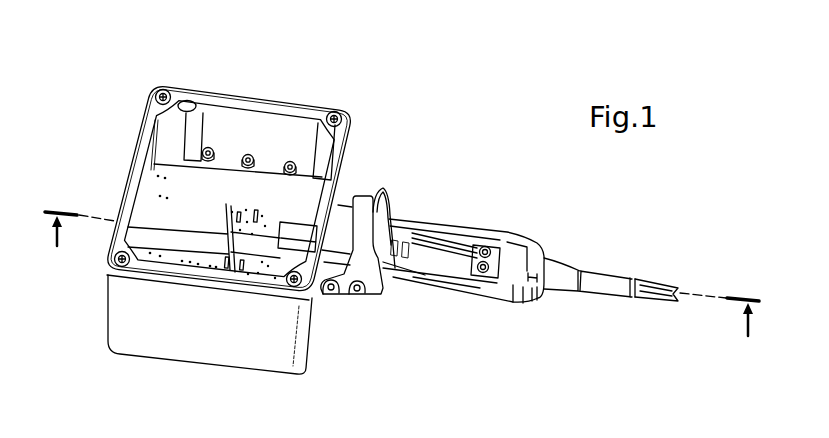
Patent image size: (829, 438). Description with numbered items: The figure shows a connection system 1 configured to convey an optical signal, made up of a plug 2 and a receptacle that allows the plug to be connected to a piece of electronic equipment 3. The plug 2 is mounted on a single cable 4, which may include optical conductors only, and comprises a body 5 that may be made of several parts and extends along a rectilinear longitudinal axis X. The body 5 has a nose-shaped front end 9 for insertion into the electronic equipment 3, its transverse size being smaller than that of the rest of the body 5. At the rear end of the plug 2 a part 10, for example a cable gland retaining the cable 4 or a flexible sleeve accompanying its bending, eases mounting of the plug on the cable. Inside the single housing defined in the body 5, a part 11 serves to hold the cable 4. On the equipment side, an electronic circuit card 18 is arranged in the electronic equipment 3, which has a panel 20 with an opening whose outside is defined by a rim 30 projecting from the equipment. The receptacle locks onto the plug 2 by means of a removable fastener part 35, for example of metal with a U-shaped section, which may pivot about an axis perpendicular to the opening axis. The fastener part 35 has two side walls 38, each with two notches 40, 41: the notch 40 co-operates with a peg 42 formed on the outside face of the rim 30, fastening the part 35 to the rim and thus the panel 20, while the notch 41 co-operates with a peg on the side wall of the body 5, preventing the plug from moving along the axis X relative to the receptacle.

The connection system 1 is at (446, 123).
The plug 2 is at (484, 218).
The electronic equipment 3 is at (301, 80).
The cable 4 is at (664, 283).
The body 5 is at (513, 302).
The front end 9 is at (296, 232).
The part 10 is at (560, 268).
The part 11 is at (480, 278).
The electronic circuit card 18 is at (177, 178).
The panel 20 is at (271, 344).
The rim 30 is at (328, 255).
The fastener part 35 is at (366, 195).
The side walls 38 is at (398, 270).
The notch 40 is at (341, 296).
The notch 41 is at (360, 292).
The peg 42 is at (324, 296).